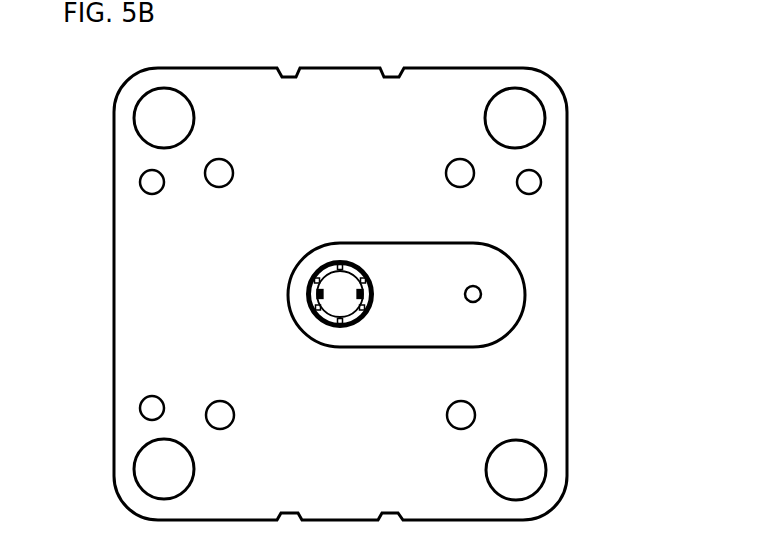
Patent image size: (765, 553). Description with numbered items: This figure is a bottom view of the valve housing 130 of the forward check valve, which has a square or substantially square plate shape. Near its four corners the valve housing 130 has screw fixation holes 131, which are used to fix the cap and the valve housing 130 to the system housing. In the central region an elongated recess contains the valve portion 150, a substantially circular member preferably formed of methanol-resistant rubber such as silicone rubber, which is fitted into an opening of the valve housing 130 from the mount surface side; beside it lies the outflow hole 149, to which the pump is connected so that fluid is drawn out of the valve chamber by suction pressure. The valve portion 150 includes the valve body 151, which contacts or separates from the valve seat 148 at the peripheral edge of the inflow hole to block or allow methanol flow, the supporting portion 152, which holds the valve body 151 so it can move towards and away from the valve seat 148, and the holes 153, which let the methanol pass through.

The valve housing 130 is at (500, 67).
The screw fixation holes 131 is at (153, 121).
The valve seat 148 is at (472, 329).
The outflow hole 149 is at (482, 294).
The valve portion 150 is at (371, 293).
The valve body 151 is at (345, 290).
The supporting portion 152 is at (376, 293).
The holes 153 is at (318, 296).